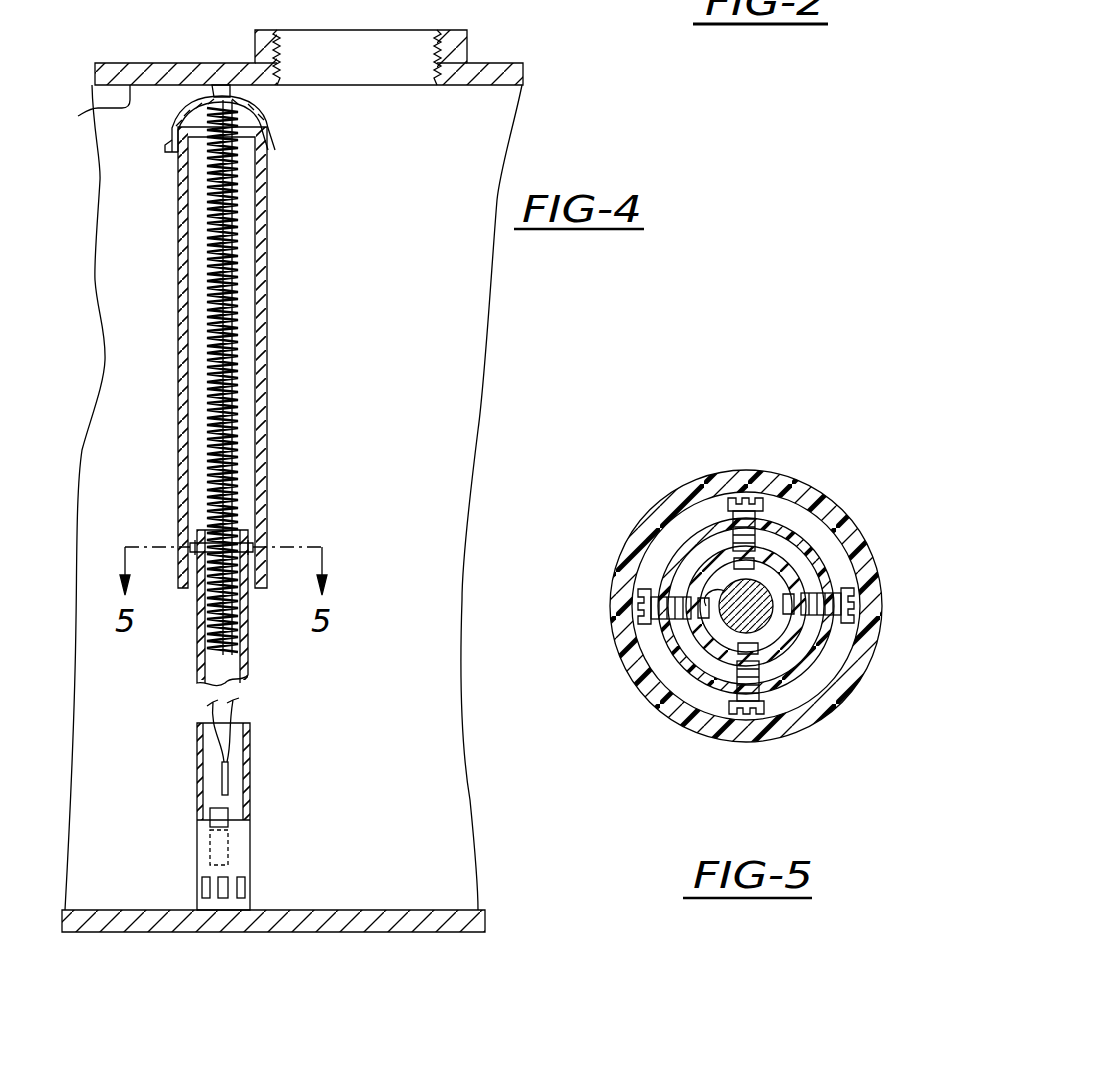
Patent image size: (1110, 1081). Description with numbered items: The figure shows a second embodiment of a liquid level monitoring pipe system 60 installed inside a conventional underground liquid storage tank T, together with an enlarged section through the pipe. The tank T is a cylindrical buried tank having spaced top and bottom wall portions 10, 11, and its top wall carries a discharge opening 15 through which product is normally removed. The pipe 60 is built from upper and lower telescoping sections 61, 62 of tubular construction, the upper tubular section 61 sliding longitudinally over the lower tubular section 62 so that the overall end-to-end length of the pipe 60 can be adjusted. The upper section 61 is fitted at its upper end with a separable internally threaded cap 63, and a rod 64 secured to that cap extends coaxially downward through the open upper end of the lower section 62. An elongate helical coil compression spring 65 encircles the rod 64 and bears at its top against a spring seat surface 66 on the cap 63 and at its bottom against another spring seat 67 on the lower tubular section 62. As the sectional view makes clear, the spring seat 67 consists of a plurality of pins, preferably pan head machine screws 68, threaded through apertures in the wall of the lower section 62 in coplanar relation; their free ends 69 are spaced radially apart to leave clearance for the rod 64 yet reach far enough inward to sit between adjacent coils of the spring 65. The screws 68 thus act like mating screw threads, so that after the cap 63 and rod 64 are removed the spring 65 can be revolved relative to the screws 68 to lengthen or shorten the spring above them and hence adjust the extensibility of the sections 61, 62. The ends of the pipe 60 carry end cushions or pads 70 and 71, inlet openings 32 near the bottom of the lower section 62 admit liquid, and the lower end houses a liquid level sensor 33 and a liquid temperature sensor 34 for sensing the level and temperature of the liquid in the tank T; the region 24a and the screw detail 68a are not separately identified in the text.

In FIG. 4, the top wall portion 10 is at (86, 497).
In FIG. 4, the bottom wall portion 11 is at (382, 910).
In FIG. 4, the discharge opening 15 is at (430, 88).
In FIG. 4, the chamber 24a is at (178, 503).
In FIG. 4, the inlet openings 32 is at (246, 882).
In FIG. 4, the liquid level sensor 33 is at (212, 822).
In FIG. 4, the liquid temperature sensor 34 is at (228, 782).
In FIG. 4, the liquid level monitoring pipe system 60 is at (282, 357).
In FIG. 5, the liquid level monitoring pipe system 60 is at (740, 583).
In FIG. 4, the upper tubular section 61 is at (258, 302).
In FIG. 5, the upper tubular section 61 is at (665, 705).
In FIG. 4, the lower tubular section 62 is at (250, 740).
In FIG. 5, the lower tubular section 62 is at (746, 606).
In FIG. 4, the cap 63 is at (272, 110).
In FIG. 4, the rod 64 is at (232, 215).
In FIG. 5, the rod 64 is at (766, 590).
In FIG. 4, the helical coil compression spring 65 is at (236, 372).
In FIG. 5, the helical coil compression spring 65 is at (760, 602).
In FIG. 4, the spring seat surface 66 is at (178, 152).
In FIG. 4, the spring seat 67 is at (238, 547).
In FIG. 5, the spring seat 67 is at (805, 655).
In FIG. 5, the pan head machine screws 68 is at (690, 607).
In FIG. 5, the screw head 68a is at (760, 545).
In FIG. 5, the free ends 69 is at (722, 585).
In FIG. 4, the end cushion or pad 70 is at (222, 85).
In FIG. 4, the end cushion or pad 71 is at (250, 910).
In FIG. 4, the underground liquid storage tank T is at (523, 65).